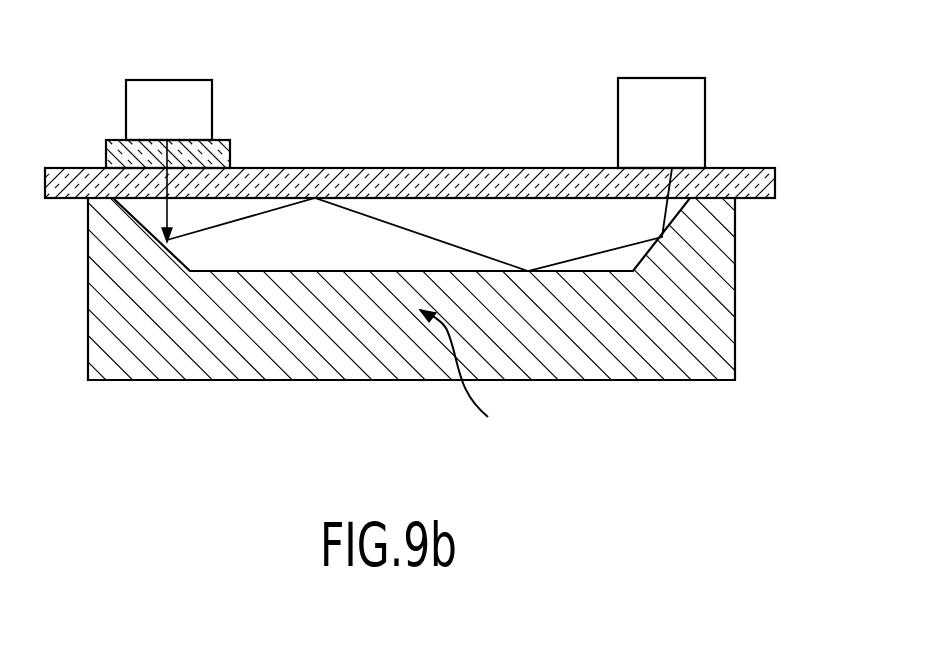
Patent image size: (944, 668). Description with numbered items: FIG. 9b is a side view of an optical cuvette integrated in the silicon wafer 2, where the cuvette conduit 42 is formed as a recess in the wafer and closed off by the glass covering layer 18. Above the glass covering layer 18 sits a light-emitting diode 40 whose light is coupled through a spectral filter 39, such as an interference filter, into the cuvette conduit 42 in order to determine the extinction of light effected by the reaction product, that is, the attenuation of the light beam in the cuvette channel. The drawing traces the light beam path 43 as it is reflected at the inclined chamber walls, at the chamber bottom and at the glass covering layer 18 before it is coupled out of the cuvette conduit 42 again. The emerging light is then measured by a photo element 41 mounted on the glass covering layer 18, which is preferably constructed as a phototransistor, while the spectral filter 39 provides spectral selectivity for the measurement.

The silicon wafer 2 is at (715, 307).
The glass covering layer 18 is at (60, 185).
The spectral filter 39 is at (107, 168).
The light-emitting diode 40 is at (153, 86).
The photo element 41 is at (693, 130).
The cuvette conduit 42 is at (467, 377).
The light beam path 43 is at (358, 212).